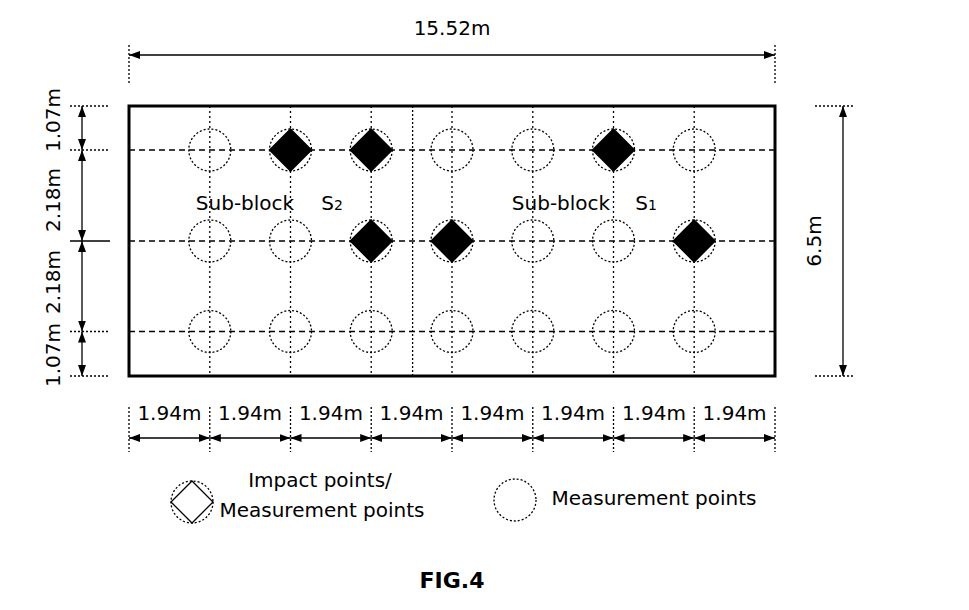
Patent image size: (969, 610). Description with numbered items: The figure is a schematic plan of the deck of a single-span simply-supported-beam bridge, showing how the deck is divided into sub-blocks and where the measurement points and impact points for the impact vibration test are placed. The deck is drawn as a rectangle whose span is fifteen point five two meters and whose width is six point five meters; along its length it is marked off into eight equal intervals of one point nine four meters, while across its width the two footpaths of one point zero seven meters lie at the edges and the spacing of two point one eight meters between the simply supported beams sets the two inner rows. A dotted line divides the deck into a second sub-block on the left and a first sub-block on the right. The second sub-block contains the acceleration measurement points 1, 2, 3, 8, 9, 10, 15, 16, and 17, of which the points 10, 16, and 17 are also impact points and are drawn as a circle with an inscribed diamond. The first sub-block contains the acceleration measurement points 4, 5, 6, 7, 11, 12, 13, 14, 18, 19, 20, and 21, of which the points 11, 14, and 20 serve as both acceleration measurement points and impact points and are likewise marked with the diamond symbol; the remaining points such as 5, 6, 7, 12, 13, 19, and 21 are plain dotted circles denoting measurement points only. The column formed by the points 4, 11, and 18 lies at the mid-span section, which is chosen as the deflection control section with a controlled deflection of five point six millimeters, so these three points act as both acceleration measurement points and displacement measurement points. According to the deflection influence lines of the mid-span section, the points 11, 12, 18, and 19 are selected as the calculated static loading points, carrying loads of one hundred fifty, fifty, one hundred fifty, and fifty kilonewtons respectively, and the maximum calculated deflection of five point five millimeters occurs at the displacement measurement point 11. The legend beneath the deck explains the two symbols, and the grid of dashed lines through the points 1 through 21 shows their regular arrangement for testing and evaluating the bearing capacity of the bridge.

The acceleration measurement point 1 is at (210, 332).
The acceleration measurement point 2 is at (291, 332).
The acceleration measurement point 3 is at (371, 332).
The acceleration measurement point 4 is at (452, 332).
The acceleration measurement point 5 is at (533, 332).
The acceleration measurement point 6 is at (614, 332).
The acceleration measurement point 7 is at (694, 332).
The acceleration measurement point 8 is at (210, 241).
The acceleration measurement point 9 is at (291, 241).
The acceleration measurement point and impact point 10 is at (371, 241).
The acceleration measurement point and impact point 11 is at (452, 241).
The acceleration measurement point 12 is at (533, 241).
The acceleration measurement point 13 is at (614, 241).
The acceleration measurement point and impact point 14 is at (694, 241).
The acceleration measurement point 15 is at (210, 150).
The acceleration measurement point and impact point 16 is at (291, 150).
The acceleration measurement point and impact point 17 is at (371, 150).
The acceleration measurement point 18 is at (452, 150).
The acceleration measurement point 19 is at (533, 150).
The acceleration measurement point and impact point 20 is at (614, 150).
The acceleration measurement point 21 is at (694, 150).